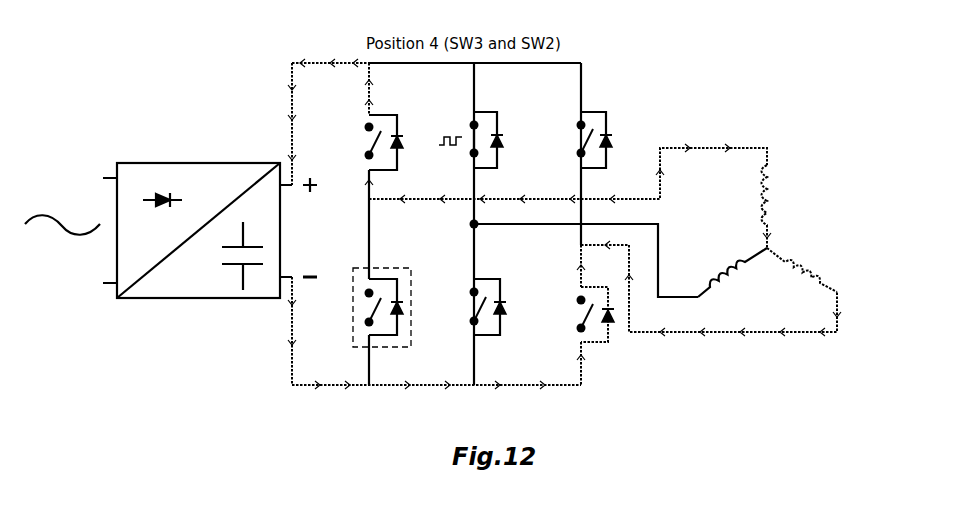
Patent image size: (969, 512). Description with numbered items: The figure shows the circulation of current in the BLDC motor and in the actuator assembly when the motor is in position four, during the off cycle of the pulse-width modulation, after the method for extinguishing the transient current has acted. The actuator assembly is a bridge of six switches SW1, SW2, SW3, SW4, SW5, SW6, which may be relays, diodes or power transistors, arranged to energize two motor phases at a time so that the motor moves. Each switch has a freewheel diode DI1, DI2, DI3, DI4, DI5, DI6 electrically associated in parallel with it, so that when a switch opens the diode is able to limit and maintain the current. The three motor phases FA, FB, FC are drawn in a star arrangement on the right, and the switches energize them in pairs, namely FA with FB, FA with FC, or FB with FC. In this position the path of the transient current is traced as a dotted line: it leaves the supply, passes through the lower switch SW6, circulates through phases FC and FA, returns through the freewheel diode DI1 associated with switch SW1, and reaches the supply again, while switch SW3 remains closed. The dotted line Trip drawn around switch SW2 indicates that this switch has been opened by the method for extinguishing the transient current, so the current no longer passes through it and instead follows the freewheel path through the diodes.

The switch SW1 is at (391, 124).
The switch SW2 is at (391, 330).
The switch SW3 is at (496, 123).
The switch SW4 is at (498, 329).
The switch SW5 is at (604, 123).
The switch SW6 is at (603, 333).
The freewheel diode DI1 is at (396, 142).
The freewheel diode DI2 is at (403, 307).
The freewheel diode DI3 is at (500, 140).
The freewheel diode DI4 is at (502, 307).
The freewheel diode DI5 is at (609, 140).
The freewheel diode DI6 is at (597, 307).
The phase FA is at (781, 206).
The phase FB is at (732, 269).
The phase FC is at (802, 270).
The dotted line indicating switch opening Trip is at (364, 307).